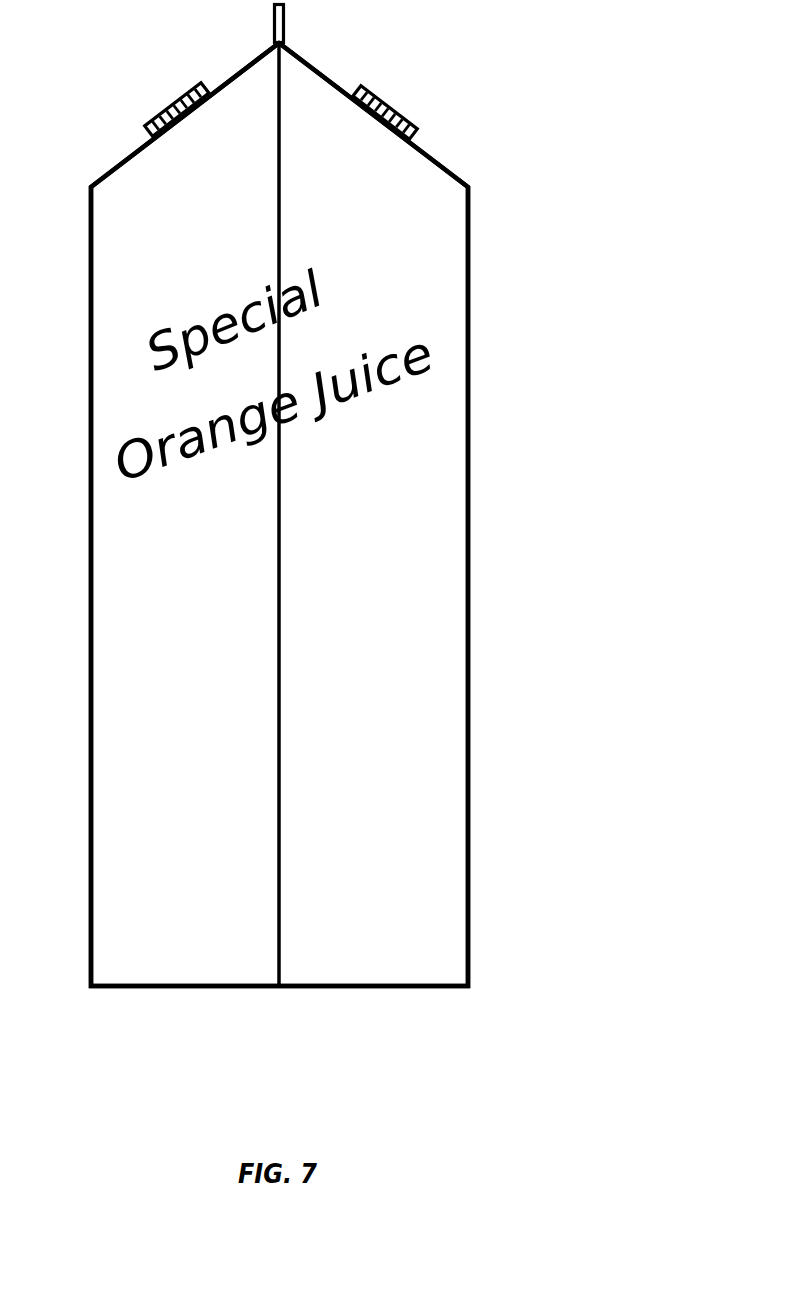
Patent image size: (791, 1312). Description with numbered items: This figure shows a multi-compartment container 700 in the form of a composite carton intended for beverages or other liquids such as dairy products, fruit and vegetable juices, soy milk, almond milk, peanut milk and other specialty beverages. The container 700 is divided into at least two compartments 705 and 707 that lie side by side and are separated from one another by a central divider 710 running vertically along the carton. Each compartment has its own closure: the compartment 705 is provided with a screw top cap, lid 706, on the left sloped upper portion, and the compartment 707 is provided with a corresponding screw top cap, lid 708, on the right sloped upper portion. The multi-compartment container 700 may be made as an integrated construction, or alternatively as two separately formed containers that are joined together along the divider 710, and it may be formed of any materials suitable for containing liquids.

The multi-compartment container 700 is at (450, 172).
The compartment 705 is at (185, 514).
The lid 706 is at (168, 102).
The compartment 707 is at (373, 514).
The lid 708 is at (382, 97).
The divider 710 is at (280, 962).